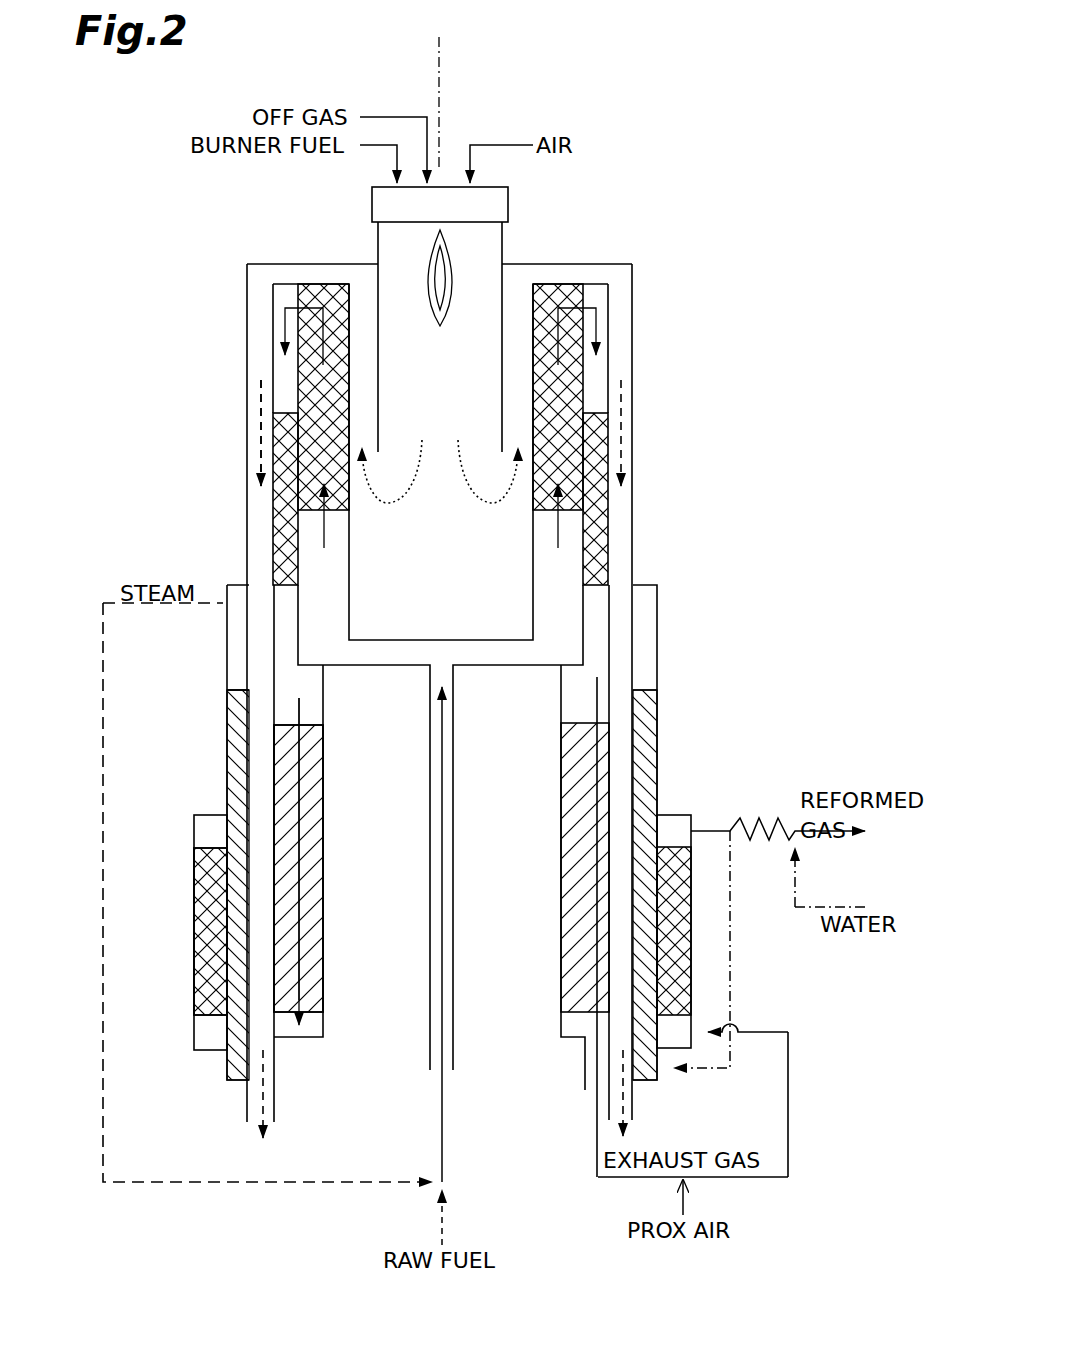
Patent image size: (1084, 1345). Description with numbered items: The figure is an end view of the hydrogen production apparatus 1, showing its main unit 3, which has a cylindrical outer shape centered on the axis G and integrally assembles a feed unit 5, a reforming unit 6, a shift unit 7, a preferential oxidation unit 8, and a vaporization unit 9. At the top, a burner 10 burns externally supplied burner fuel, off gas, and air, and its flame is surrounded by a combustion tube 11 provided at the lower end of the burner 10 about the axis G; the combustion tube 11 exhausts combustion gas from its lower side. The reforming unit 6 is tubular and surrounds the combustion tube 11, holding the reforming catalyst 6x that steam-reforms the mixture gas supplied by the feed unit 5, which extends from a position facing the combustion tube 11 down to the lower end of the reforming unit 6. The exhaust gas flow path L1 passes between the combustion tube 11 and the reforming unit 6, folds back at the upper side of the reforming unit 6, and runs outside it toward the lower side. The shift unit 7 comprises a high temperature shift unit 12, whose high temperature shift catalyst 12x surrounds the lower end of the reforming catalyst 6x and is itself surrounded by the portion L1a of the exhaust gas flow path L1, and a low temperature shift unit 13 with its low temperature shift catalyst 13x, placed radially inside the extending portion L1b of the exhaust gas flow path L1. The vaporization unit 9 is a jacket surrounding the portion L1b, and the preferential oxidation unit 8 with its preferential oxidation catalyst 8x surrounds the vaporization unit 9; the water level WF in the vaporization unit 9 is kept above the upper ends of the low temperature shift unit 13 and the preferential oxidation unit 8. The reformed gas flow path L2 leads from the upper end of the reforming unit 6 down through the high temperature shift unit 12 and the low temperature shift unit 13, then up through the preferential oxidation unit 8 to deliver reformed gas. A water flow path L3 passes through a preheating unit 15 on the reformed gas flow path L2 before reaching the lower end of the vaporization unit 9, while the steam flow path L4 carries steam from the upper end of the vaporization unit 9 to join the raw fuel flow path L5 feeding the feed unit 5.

The hydrogen production apparatus 1 is at (747, 114).
The main unit 3 is at (629, 237).
The feed unit 5 is at (456, 636).
The reforming unit 6 is at (353, 378).
The reforming catalyst 6x is at (556, 370).
The shift unit 7 is at (502, 795).
The preferential oxidation unit 8 is at (195, 868).
The preferential oxidation catalyst 8x is at (206, 902).
The vaporization unit 9 is at (216, 742).
The burner 10 is at (508, 205).
The combustion tube 11 is at (502, 243).
The high temperature shift unit 12 is at (615, 512).
The high temperature shift catalyst 12x is at (599, 543).
The low temperature shift unit 13 is at (330, 833).
The low temperature shift catalyst 13x is at (318, 925).
The preheating unit 15 is at (765, 820).
The axis G is at (442, 47).
The level of water WF is at (237, 690).
The exhaust gas flow path L1 is at (312, 272).
The portion of the exhaust gas flow path L1a is at (253, 377).
The extending portion of the exhaust gas flow path L1b is at (262, 762).
The reformed gas flow path L2 is at (788, 1118).
The water flow path L3 is at (730, 933).
The steam flow path L4 is at (252, 1183).
The raw fuel flow path L5 is at (443, 1218).